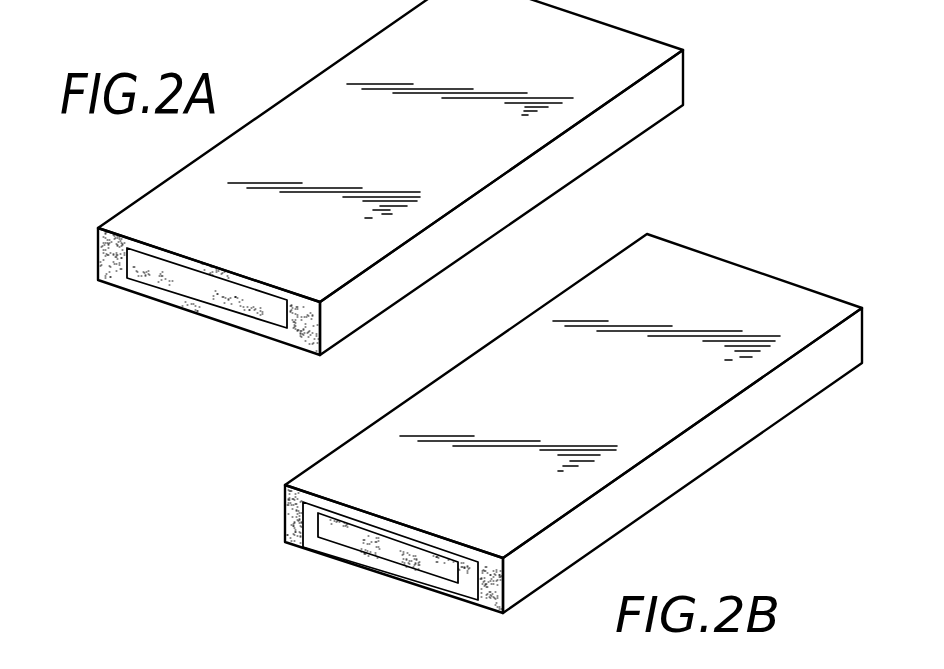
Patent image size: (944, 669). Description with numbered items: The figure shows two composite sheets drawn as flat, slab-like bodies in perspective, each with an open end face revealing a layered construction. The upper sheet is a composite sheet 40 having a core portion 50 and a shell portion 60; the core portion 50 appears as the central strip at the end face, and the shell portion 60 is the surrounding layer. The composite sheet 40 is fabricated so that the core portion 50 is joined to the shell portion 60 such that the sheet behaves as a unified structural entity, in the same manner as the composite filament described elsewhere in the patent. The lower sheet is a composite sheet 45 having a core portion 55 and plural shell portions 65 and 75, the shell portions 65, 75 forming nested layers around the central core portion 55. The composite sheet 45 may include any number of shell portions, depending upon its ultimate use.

In FIG. 2A, the composite sheet 40 is at (155, 180).
In FIG. 2A, the core portion 50 is at (267, 310).
In FIG. 2A, the shell portion 60 is at (113, 262).
In FIG. 2B, the composite sheet 45 is at (337, 440).
In FIG. 2B, the core portion 55 is at (400, 550).
In FIG. 2B, the shell portion 65 is at (309, 528).
In FIG. 2B, the shell portion 75 is at (287, 508).